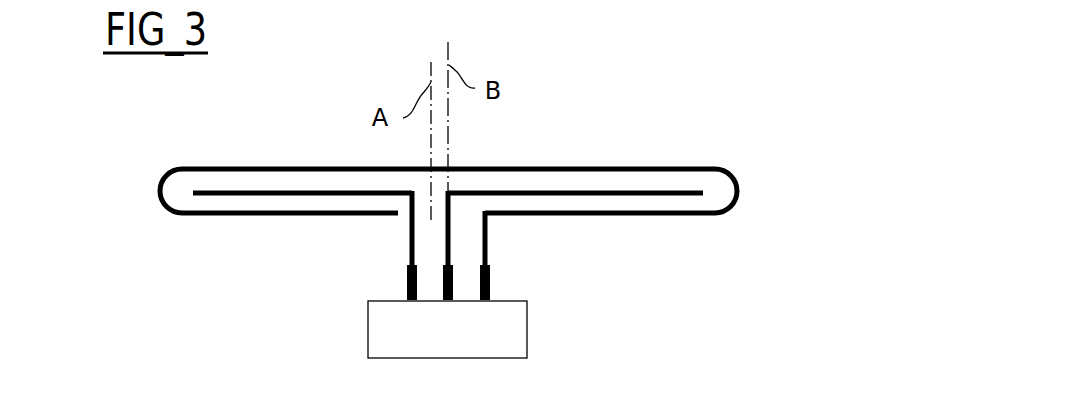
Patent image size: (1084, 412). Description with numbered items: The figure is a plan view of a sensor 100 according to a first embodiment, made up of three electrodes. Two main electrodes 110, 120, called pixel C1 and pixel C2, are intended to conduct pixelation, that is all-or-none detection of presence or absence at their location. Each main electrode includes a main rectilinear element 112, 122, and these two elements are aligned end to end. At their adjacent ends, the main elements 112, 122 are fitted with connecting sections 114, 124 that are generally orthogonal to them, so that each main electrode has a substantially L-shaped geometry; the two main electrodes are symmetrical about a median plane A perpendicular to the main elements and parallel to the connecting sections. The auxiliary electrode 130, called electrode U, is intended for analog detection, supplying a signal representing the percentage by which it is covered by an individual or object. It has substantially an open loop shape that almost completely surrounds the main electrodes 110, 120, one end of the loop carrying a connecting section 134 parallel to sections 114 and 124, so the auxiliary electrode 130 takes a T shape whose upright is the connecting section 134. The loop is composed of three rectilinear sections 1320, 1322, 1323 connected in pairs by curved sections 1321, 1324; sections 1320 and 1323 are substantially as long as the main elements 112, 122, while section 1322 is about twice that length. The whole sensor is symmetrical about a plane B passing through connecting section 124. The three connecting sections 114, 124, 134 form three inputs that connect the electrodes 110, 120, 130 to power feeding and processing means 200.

The sensor 100 is at (196, 249).
The main electrode 110 is at (355, 195).
The main rectilinear element 112 is at (225, 190).
The connecting section 114 is at (407, 282).
The main electrode 120 is at (543, 195).
The main rectilinear element 122 is at (650, 190).
The connecting section 124 is at (453, 290).
The auxiliary electrode 130 is at (695, 220).
The connecting section 134 is at (490, 274).
The rectilinear section 1320 is at (594, 214).
The curved section 1321 is at (737, 192).
The rectilinear section 1322 is at (610, 168).
The rectilinear section 1323 is at (288, 217).
The curved section 1324 is at (162, 190).
The power feeding and processing means 200 is at (527, 345).